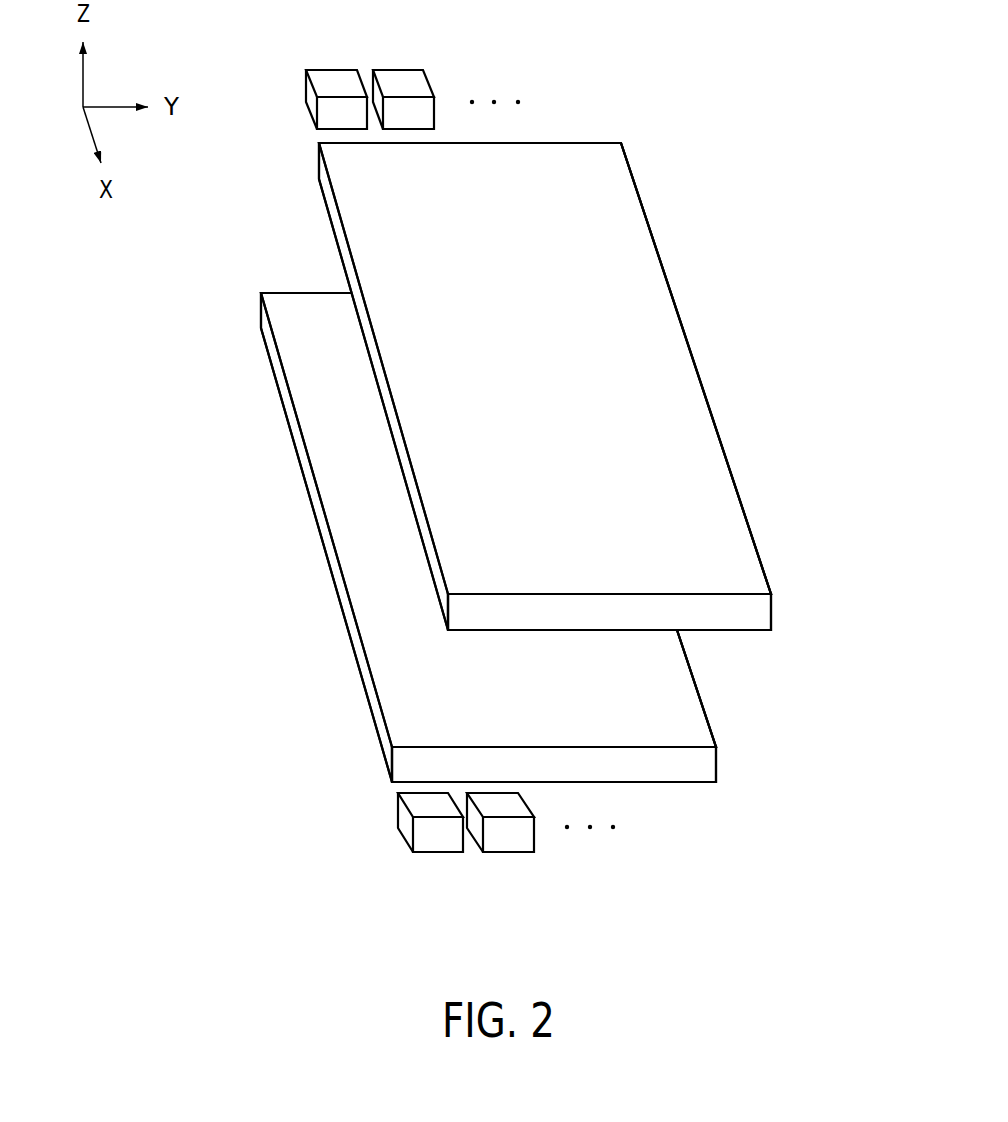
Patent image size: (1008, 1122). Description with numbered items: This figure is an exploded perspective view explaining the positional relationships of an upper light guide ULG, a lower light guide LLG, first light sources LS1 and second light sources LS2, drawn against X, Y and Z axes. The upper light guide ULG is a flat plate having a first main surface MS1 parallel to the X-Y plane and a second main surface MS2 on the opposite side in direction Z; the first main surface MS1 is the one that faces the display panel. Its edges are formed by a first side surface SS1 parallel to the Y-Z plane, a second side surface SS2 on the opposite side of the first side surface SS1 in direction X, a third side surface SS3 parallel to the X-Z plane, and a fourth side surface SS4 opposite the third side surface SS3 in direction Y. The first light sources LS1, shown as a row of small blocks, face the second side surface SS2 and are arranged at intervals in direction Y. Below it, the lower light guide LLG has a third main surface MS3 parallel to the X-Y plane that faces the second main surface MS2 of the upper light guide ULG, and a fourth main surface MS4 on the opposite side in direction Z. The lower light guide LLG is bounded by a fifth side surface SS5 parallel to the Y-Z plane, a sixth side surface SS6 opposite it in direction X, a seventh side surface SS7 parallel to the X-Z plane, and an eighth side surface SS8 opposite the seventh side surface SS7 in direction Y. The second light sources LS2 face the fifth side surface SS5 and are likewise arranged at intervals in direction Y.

The upper light guide ULG is at (697, 186).
The lower light guide LLG is at (281, 474).
The first light sources LS1 is at (327, 68).
The second light sources LS2 is at (436, 840).
The first main surface MS1 is at (632, 370).
The second main surface MS2 is at (722, 638).
The third main surface MS3 is at (540, 707).
The fourth main surface MS4 is at (670, 787).
The first side surface SS1 is at (742, 612).
The second side surface SS2 is at (592, 138).
The third side surface SS3 is at (392, 430).
The fourth side surface SS4 is at (727, 446).
The fifth side surface SS5 is at (694, 763).
The sixth side surface SS6 is at (300, 288).
The seventh side surface SS7 is at (345, 621).
The eighth side surface SS8 is at (719, 731).